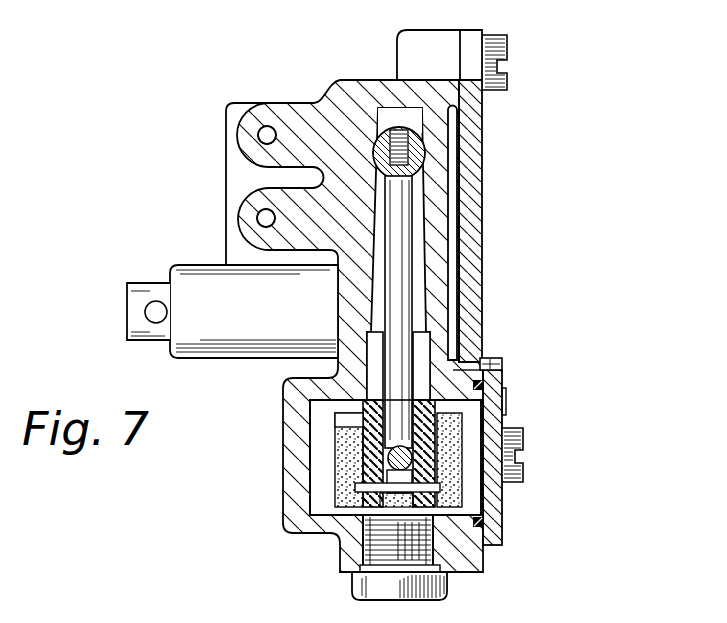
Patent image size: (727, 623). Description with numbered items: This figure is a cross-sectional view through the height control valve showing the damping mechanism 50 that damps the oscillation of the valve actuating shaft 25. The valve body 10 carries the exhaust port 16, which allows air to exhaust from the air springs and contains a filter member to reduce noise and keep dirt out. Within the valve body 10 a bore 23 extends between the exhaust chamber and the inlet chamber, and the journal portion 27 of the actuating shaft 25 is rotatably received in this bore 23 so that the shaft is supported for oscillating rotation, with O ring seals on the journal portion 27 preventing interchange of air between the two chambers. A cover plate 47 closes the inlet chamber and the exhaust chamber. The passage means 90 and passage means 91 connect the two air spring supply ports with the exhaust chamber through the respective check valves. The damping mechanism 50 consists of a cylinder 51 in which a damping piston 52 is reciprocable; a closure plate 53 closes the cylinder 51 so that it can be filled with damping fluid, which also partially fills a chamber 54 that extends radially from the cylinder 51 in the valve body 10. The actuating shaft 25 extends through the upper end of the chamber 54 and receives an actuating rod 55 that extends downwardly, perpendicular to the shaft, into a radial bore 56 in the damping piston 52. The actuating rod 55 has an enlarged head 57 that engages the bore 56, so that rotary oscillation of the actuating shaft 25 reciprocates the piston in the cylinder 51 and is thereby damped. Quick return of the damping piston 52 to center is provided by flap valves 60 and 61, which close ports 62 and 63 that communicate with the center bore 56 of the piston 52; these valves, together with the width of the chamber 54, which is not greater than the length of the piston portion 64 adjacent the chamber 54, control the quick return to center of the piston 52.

The valve body 10 is at (333, 79).
The exhaust port 16 is at (160, 290).
The bore 23 is at (425, 160).
The valve actuating shaft 25 is at (412, 133).
The journal portion 27 is at (418, 150).
The cover plate 47 is at (473, 213).
The damping mechanism 50 is at (401, 457).
The cylinder 51 is at (293, 403).
The damping piston 52 is at (343, 476).
The closure plate 53 is at (497, 366).
The chamber 54 is at (425, 338).
The actuating rod 55 is at (400, 270).
The radial bore 56 is at (390, 514).
The enlarged head 57 is at (440, 472).
The flap valve 60 is at (340, 430).
The flap valve 61 is at (440, 417).
The port 62 is at (345, 421).
The port 63 is at (524, 434).
The piston portion 64 is at (506, 399).
The passage means 90 is at (262, 137).
The passage means 91 is at (262, 220).